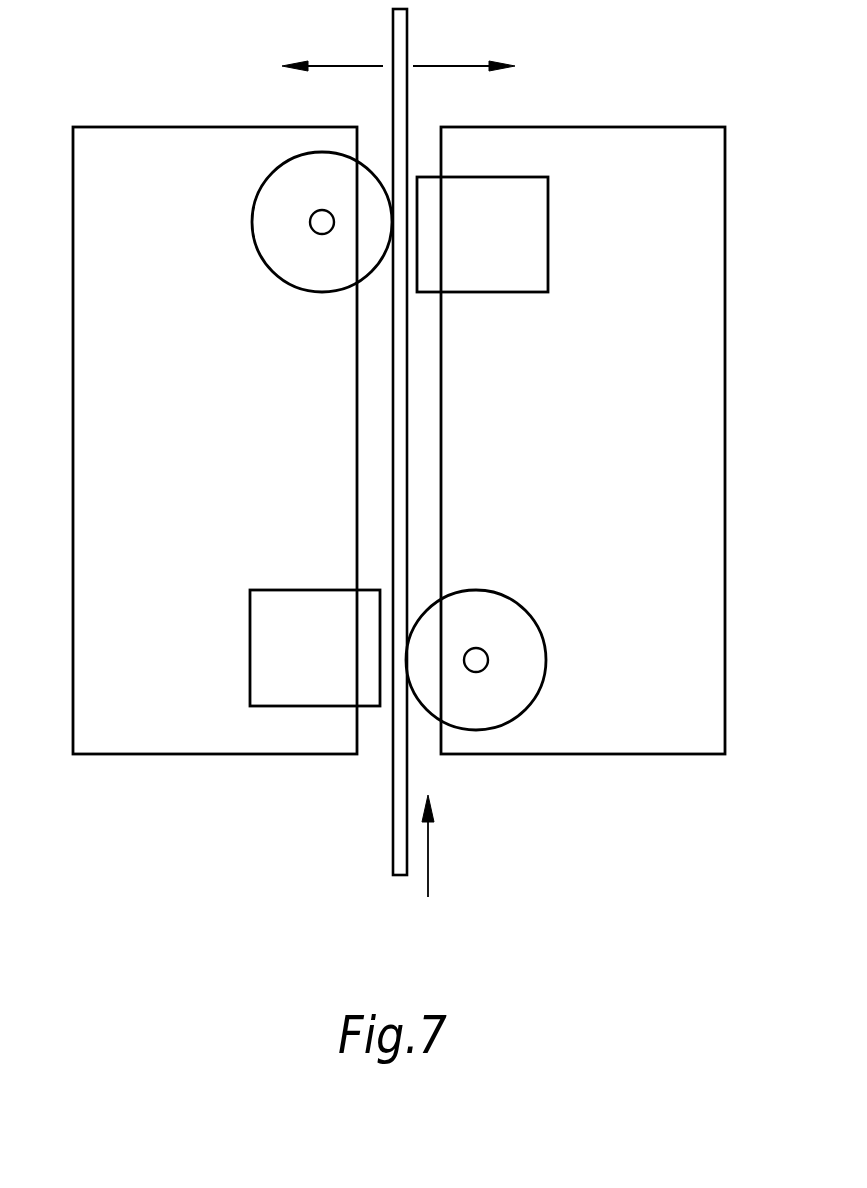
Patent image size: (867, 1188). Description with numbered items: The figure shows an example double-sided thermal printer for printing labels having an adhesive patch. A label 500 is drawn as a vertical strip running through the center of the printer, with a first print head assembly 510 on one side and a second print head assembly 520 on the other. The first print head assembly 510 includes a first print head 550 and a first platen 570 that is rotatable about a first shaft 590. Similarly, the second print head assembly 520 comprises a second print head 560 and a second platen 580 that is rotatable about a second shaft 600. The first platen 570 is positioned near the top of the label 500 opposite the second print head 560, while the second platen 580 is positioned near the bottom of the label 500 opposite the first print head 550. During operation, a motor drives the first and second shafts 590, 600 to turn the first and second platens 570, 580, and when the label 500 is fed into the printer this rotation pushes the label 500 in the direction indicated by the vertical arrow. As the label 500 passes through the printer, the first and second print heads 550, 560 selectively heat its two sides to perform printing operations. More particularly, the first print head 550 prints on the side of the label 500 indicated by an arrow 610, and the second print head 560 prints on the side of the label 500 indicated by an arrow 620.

The label 500 is at (393, 835).
The first print head assembly 510 is at (78, 376).
The second print head assembly 520 is at (727, 369).
The first print head 550 is at (250, 611).
The second print head 560 is at (547, 200).
The first platen 570 is at (283, 172).
The second platen 580 is at (516, 609).
The first shaft 590 is at (310, 219).
The second shaft 600 is at (482, 657).
The arrow 610 is at (347, 63).
The arrow 620 is at (454, 63).